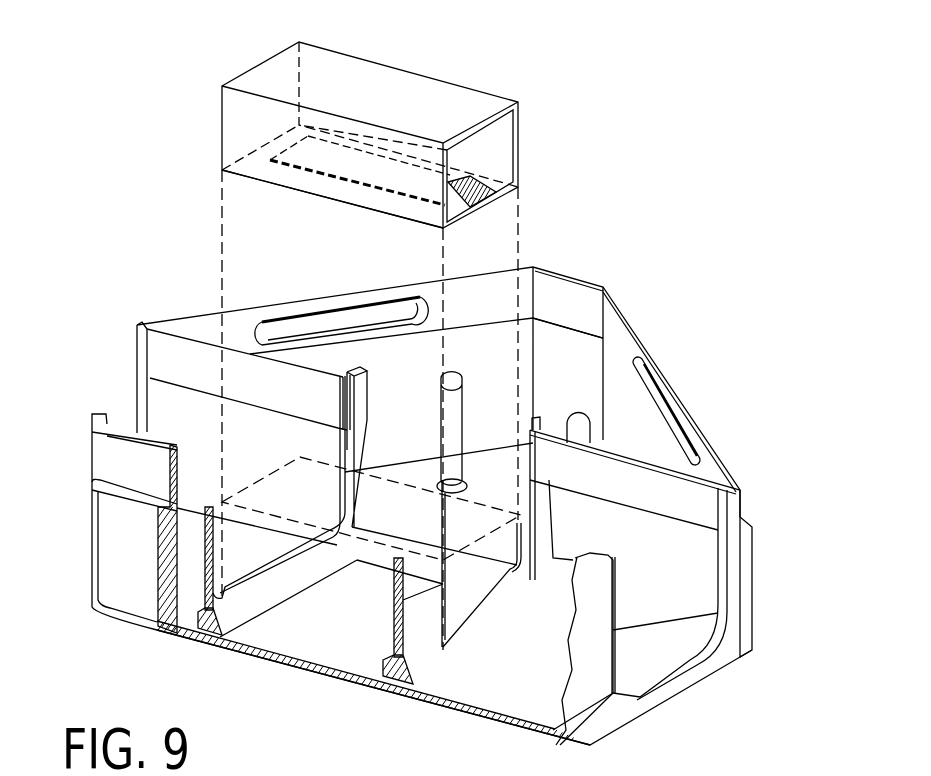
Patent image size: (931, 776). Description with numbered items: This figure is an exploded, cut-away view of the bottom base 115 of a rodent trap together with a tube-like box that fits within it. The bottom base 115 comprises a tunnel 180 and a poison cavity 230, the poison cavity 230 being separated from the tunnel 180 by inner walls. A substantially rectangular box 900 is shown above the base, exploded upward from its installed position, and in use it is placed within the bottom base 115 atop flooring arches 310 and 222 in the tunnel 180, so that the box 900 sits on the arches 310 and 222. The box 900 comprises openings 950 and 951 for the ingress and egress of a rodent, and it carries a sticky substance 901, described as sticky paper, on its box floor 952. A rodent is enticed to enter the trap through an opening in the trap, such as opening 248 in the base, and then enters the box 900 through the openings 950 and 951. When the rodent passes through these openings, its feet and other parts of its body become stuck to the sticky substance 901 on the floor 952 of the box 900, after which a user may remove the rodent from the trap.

The bottom base 115 is at (713, 397).
The tunnel 180 is at (672, 576).
The flooring arch 222 is at (497, 628).
The poison cavity 230 is at (565, 372).
The opening 248 is at (140, 380).
The flooring arch 310 is at (278, 565).
The substantially rectangular box 900 is at (455, 73).
The opening 950 is at (510, 133).
The opening 951 is at (277, 77).
The box floor 952 is at (342, 193).
The sticky substance 901 is at (475, 190).